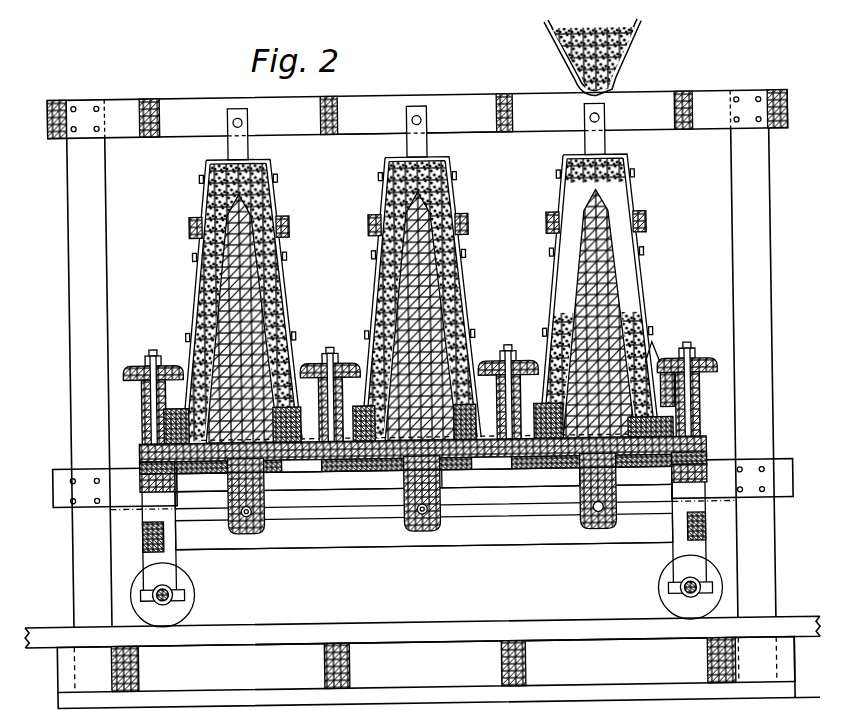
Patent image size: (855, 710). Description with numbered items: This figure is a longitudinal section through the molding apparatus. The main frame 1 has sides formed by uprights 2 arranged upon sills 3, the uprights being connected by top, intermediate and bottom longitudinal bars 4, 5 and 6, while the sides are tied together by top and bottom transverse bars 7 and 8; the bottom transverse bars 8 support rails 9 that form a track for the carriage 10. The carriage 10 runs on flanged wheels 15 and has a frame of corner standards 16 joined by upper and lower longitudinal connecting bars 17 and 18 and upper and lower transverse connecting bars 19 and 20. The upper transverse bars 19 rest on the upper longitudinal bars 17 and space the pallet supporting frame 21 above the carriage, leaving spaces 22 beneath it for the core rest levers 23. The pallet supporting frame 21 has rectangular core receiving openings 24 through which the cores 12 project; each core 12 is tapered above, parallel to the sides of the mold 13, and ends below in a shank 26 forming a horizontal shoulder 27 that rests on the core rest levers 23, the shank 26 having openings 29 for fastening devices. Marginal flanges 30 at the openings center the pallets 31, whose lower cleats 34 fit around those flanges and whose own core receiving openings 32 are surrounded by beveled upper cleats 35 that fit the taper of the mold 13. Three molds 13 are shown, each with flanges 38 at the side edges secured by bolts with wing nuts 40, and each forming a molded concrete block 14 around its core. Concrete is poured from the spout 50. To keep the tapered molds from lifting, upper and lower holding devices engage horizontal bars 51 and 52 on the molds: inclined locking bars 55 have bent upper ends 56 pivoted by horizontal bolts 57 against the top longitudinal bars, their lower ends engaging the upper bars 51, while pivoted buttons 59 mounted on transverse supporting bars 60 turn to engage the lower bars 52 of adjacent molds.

The main frame 1 is at (417, 101).
The uprights 2 is at (772, 206).
The sills 3 is at (575, 703).
The top longitudinal bar 4 is at (532, 133).
The intermediate longitudinal bar 5 is at (515, 496).
The bottom longitudinal bar 6 is at (426, 665).
The top transverse bar 7 is at (143, 121).
The bottom transverse bar 8 is at (134, 667).
The rails 9 is at (312, 622).
The carriage 10 is at (424, 553).
The cores 12 is at (419, 325).
The mold 13 is at (196, 301).
The molded concrete block 14 is at (278, 286).
The wheels 15 is at (188, 603).
The corner standards 16 is at (173, 559).
The upper longitudinal connecting bars 17 is at (423, 474).
The lower longitudinal connecting bars 18 is at (423, 531).
The upper transverse connecting bars 19 is at (140, 452).
The lower transverse connecting bars 20 is at (142, 532).
The pallet supporting frame 21 is at (537, 470).
The spaces 22 is at (482, 470).
The core rest levers 23 is at (228, 466).
The core receiving openings 24 is at (277, 491).
The shank 26 is at (228, 525).
The horizontal shoulder 27 is at (423, 477).
The openings 29 is at (406, 520).
The marginal flanges 30 is at (672, 429).
The pallets 31 is at (674, 396).
The core receiving openings 32 is at (165, 416).
The cleats 34 is at (397, 475).
The cleats 35 is at (654, 348).
The outwardly extending flanges 38 is at (302, 350).
The wing nuts 40 is at (360, 258).
The spout 50 is at (642, 55).
The upper horizontal bars 51 is at (292, 225).
The lower horizontal bars 52 is at (525, 358).
The locking bars 55 is at (252, 152).
The upper ends 56 is at (236, 119).
The horizontal bolts 57 is at (246, 120).
The pivoted buttons 59 is at (150, 362).
The transverse supporting bars 60 is at (145, 393).